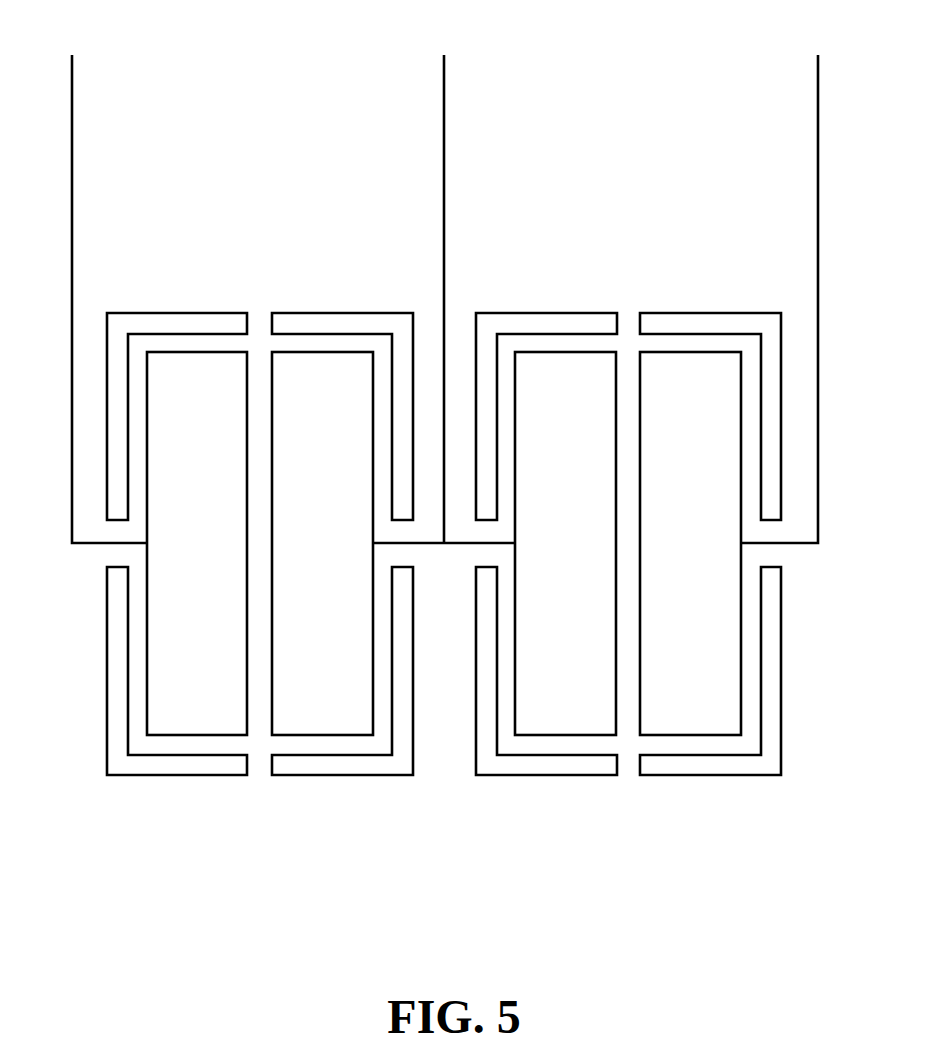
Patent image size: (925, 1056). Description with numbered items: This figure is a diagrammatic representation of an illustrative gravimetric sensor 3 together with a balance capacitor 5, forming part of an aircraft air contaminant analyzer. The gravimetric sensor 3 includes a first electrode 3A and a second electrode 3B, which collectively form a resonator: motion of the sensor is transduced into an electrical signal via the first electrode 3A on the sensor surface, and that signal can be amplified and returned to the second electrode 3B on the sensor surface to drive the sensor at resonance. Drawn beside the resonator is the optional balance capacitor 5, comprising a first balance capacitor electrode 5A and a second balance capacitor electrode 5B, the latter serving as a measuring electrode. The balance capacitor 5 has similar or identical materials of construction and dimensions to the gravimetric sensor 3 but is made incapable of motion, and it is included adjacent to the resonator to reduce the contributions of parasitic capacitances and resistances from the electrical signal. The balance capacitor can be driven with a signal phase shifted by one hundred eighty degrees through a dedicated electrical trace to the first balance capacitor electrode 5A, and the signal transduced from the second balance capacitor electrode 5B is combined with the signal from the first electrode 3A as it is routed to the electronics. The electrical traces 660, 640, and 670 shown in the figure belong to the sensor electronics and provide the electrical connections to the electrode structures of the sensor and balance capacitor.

The electrical trace 660 is at (72, 160).
The electrical trace 640 is at (444, 150).
The electrical trace 670 is at (416, 542).
The balance capacitor 5 is at (225, 620).
The first balance capacitor electrode 5A is at (165, 653).
The second balance capacitor electrode 5B is at (342, 569).
The gravimetric sensor 3 is at (662, 620).
The first electrode 3A is at (560, 710).
The second electrode 3B is at (744, 544).